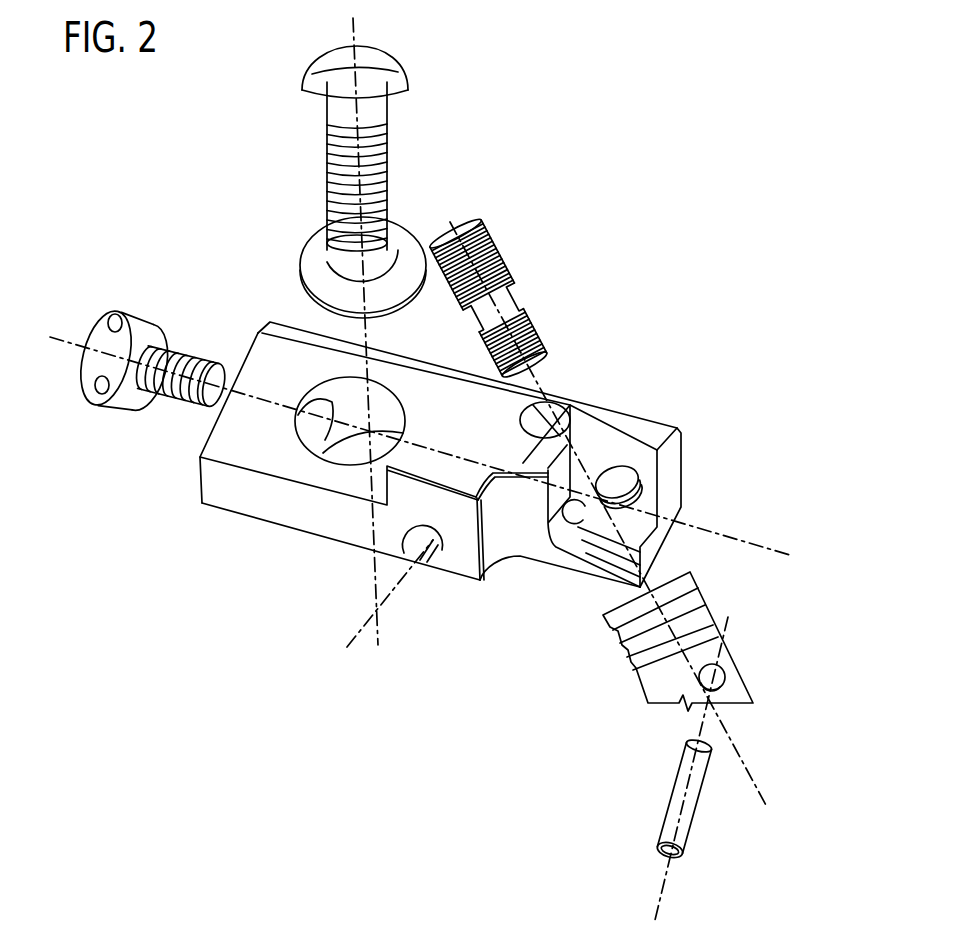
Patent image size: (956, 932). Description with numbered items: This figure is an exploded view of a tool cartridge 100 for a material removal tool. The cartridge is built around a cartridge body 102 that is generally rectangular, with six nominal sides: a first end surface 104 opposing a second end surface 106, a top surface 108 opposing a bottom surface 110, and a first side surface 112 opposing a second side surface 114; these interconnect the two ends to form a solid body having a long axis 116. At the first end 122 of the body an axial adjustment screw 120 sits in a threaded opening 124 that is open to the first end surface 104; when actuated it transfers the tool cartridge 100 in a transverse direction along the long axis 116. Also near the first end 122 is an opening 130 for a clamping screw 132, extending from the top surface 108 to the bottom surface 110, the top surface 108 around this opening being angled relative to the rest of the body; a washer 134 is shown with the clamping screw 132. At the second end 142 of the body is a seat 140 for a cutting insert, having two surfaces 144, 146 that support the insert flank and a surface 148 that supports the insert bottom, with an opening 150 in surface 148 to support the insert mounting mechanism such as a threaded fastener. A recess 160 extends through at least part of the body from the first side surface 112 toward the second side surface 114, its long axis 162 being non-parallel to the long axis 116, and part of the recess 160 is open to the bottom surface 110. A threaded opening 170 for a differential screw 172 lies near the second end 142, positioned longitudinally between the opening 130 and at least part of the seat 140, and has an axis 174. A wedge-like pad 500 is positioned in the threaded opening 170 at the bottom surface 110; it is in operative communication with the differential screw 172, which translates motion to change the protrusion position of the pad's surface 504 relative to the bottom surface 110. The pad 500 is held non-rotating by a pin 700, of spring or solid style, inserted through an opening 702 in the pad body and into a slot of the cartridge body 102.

The tool cartridge 100 is at (237, 620).
The cartridge body 102 is at (482, 442).
The first end surface 104 is at (194, 446).
The second end surface 106 is at (697, 470).
The top surface 108 is at (290, 336).
The bottom surface 110 is at (202, 520).
The first side surface 112 is at (208, 480).
The second side surface 114 is at (668, 394).
The long axis 116 is at (770, 548).
The axial adjustment screw 120 is at (100, 311).
The first end 122 is at (225, 326).
The threaded opening 124 is at (308, 428).
The opening 130 is at (350, 450).
The clamping screw 132 is at (404, 146).
The washer 134 is at (422, 221).
The seat 140 is at (566, 507).
The second end 142 is at (670, 232).
The surface 144 is at (638, 527).
The surface 146 is at (598, 516).
The surface 148 is at (604, 520).
The opening 150 is at (620, 480).
The recess 160 is at (438, 560).
The long axis 162 is at (357, 637).
The threaded opening 170 is at (531, 461).
The differential screw 172 is at (516, 246).
The axis 174 is at (455, 224).
The pad 500 is at (655, 675).
The surface 504 is at (756, 713).
The pin 700 is at (681, 808).
The opening 702 is at (714, 676).